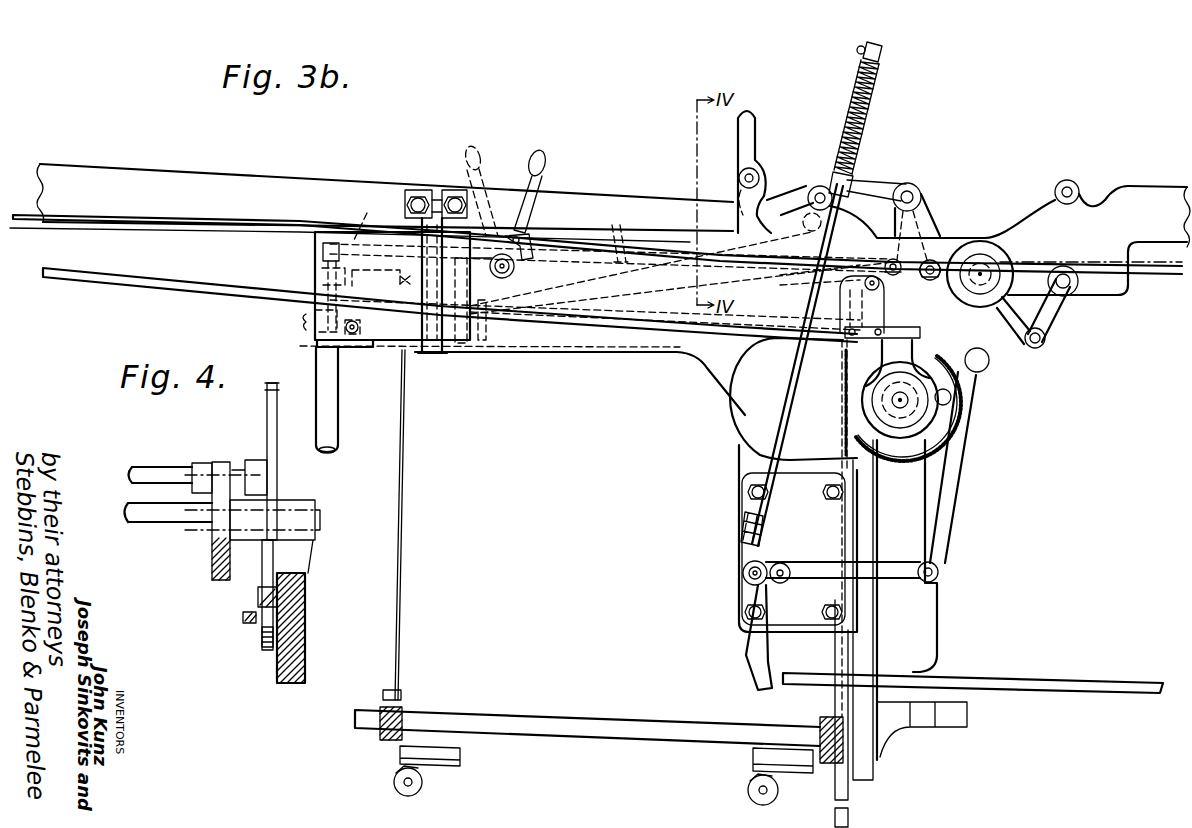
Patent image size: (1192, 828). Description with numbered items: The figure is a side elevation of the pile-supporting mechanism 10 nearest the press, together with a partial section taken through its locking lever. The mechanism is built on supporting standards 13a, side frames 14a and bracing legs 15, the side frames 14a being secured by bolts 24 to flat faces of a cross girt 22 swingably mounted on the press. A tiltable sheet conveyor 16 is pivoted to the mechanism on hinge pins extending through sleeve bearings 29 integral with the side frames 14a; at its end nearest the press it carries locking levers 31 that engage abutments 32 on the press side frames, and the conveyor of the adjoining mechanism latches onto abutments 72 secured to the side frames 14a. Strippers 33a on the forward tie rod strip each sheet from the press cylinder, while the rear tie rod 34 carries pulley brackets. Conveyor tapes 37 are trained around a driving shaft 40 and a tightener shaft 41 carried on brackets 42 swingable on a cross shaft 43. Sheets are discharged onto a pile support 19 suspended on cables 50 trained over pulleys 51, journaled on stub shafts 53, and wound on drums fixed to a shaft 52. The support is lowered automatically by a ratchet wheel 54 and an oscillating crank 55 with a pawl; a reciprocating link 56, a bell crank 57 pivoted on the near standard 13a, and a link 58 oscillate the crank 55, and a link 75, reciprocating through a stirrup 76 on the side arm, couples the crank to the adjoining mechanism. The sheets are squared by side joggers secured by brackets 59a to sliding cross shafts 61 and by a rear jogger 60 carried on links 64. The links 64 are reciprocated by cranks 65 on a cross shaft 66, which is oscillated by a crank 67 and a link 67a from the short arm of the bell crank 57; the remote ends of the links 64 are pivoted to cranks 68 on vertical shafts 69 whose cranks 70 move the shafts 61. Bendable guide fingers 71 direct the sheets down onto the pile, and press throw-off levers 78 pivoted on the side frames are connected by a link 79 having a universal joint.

In FIG. 3B, the pile-supporting mechanism 10 is at (708, 375).
In FIG. 3B, the supporting standard 13a is at (740, 530).
In FIG. 3B, the side frame 14a is at (567, 352).
In FIG. 4, the side frame 14a is at (306, 630).
In FIG. 3B, the bracing leg 15 is at (333, 413).
In FIG. 3B, the tiltable sheet conveyor 16 is at (210, 180).
In FIG. 4, the tiltable sheet conveyor 16 is at (212, 555).
In FIG. 3B, the pile support 19 is at (630, 732).
In FIG. 3B, the cross girt 22 is at (910, 625).
In FIG. 3B, the bolt 24 is at (750, 492).
In FIG. 3B, the sleeve bearing 29 is at (975, 255).
In FIG. 3B, the locking lever 31 is at (736, 216).
In FIG. 4, the locking lever 31 is at (268, 555).
In FIG. 4, the abutment 32 is at (257, 600).
In FIG. 3B, the stripper 33a is at (885, 262).
In FIG. 3B, the tie rod 34 is at (938, 258).
In FIG. 3B, the conveyor tape 37 is at (20, 215).
In FIG. 3B, the driving shaft 40 is at (1000, 264).
In FIG. 3B, the tightener shaft 41 is at (1043, 347).
In FIG. 3B, the bracket 42 is at (1052, 322).
In FIG. 3B, the cross shaft 43 is at (1078, 295).
In FIG. 3B, the cable 50 is at (400, 510).
In FIG. 3B, the pulley 51 is at (458, 320).
In FIG. 3B, the shaft 52 is at (908, 410).
In FIG. 3B, the stub shaft 53 is at (381, 266).
In FIG. 3B, the ratchet wheel 54 is at (868, 452).
In FIG. 3B, the oscillating crank 55 is at (908, 362).
In FIG. 3B, the reciprocating link 56 is at (1057, 680).
In FIG. 3B, the bell crank 57 is at (870, 572).
In FIG. 3B, the link 58 is at (946, 491).
In FIG. 3B, the bracket 59a is at (370, 326).
In FIG. 3B, the rear jogger 60 is at (470, 335).
In FIG. 3B, the cross shaft 61 is at (368, 348).
In FIG. 3B, the link 64 is at (367, 216).
In FIG. 4, the link 64 is at (242, 617).
In FIG. 3B, the crank 65 is at (935, 218).
In FIG. 3B, the cross shaft 66 is at (908, 183).
In FIG. 3B, the crank 67 is at (875, 187).
In FIG. 3B, the link 67a is at (795, 377).
In FIG. 3B, the crank 68 is at (322, 250).
In FIG. 3B, the vertical shaft 69 is at (322, 270).
In FIG. 3B, the crank 70 is at (312, 330).
In FIG. 3B, the guide finger 71 is at (619, 233).
In FIG. 3B, the abutment 72 is at (773, 214).
In FIG. 3B, the link 75 is at (645, 325).
In FIG. 3B, the stirrup 76 is at (438, 348).
In FIG. 3B, the press throw-off lever 78 is at (527, 158).
In FIG. 3B, the link 79 is at (205, 226).